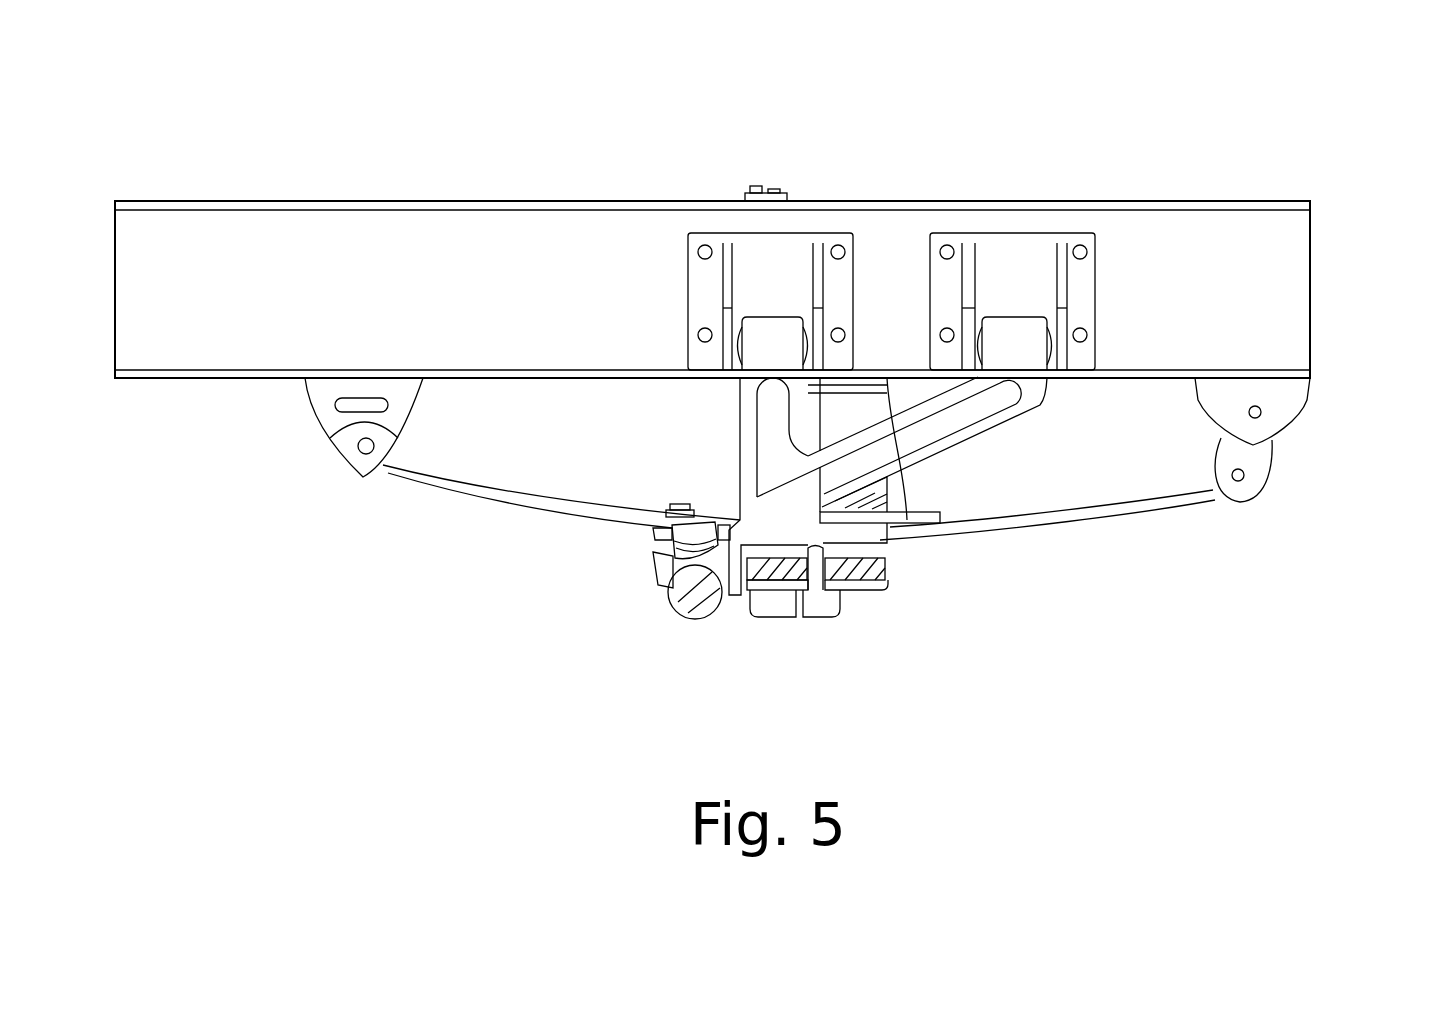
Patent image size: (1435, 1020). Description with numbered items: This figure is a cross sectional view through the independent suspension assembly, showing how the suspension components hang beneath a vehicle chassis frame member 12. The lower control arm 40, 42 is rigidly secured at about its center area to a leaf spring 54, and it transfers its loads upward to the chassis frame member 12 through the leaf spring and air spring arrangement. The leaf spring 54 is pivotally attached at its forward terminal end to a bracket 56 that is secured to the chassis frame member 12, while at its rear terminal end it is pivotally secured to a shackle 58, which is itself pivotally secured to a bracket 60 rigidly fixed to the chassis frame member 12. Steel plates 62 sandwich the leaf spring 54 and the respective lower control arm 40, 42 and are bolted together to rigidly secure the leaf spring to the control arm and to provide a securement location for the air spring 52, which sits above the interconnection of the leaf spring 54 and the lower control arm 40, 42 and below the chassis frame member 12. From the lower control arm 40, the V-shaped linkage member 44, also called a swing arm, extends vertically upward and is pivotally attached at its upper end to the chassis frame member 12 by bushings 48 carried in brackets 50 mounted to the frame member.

The chassis frame member 12 is at (1166, 236).
The lower control arm 40 is at (850, 573).
The lower control arm 42 is at (773, 563).
The V-shaped linkage member 44 is at (907, 432).
The bushing 48 is at (779, 316).
The bracket 50 is at (747, 253).
The air spring 52 is at (865, 408).
The leaf spring 54 is at (565, 505).
The bracket 56 is at (323, 398).
The shackle 58 is at (1257, 460).
The bracket 60 is at (1280, 395).
The steel plate 62 is at (893, 485).